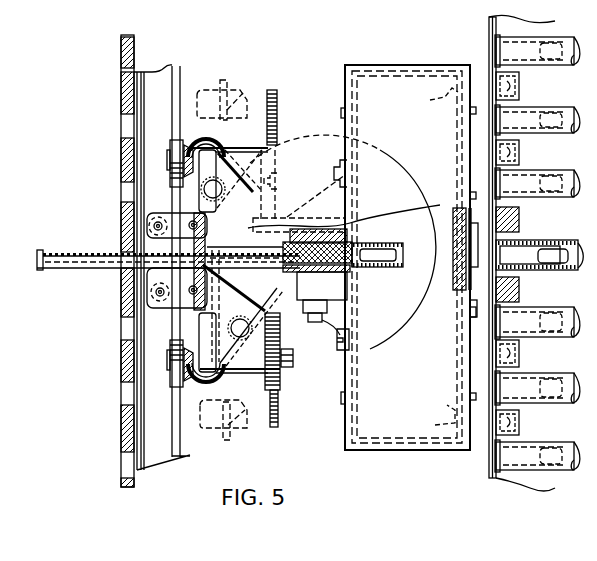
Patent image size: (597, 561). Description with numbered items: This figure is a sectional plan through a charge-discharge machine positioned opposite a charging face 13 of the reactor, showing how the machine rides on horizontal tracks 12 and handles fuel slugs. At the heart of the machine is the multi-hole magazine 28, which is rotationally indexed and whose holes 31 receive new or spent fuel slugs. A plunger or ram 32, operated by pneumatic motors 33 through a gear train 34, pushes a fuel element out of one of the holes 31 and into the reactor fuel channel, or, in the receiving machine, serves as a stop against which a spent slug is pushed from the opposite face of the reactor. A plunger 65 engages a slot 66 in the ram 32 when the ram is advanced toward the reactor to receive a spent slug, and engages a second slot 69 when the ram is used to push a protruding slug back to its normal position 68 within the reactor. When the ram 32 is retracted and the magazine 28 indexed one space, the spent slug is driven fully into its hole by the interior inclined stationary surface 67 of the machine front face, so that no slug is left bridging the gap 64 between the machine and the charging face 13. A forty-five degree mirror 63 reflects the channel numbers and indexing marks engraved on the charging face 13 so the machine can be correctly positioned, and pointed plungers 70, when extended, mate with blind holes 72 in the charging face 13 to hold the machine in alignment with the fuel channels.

The horizontal tracks 12 is at (173, 68).
The charging face 13 is at (493, 462).
The multi-hole magazine 28 is at (407, 65).
The holes 31 is at (388, 267).
The plunger (ram) 32 is at (38, 270).
The pneumatic motors 33 is at (201, 205).
The gear train 34 is at (311, 128).
The 45° mirror 63 is at (233, 148).
The gap 64 is at (483, 76).
The plunger 65 is at (330, 297).
The slot 66 is at (222, 272).
The interior inclined stationary surface 67 is at (452, 208).
The normal position 68 is at (563, 250).
The slot 69 is at (177, 275).
The pointed plungers 70 is at (519, 218).
The blind holes 72 is at (520, 422).